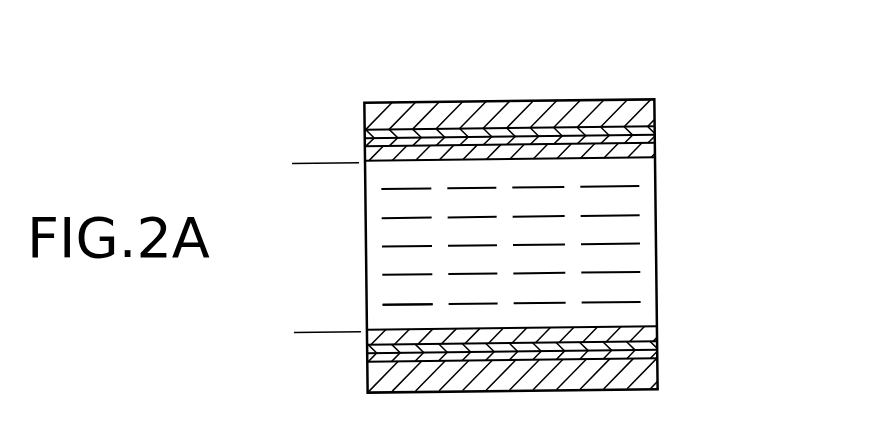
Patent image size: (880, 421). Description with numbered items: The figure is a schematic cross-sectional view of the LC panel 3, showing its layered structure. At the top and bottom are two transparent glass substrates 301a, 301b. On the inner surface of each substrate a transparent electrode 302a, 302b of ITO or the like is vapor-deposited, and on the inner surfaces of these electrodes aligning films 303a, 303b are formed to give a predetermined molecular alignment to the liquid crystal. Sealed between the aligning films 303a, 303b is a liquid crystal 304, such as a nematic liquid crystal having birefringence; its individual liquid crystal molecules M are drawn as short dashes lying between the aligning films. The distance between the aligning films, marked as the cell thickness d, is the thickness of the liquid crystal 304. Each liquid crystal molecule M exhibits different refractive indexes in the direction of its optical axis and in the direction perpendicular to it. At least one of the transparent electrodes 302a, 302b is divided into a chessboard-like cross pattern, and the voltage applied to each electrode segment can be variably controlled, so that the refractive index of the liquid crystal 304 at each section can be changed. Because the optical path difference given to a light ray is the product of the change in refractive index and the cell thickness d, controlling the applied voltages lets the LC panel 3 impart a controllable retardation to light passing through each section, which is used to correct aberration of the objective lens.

The LC panel 3 is at (584, 91).
The transparent glass substrate 301a is at (657, 105).
The transparent electrode 302a is at (657, 128).
The aligning film 303a is at (654, 152).
The liquid crystal 304 is at (668, 155).
The aligning film 303b is at (657, 332).
The transparent electrode 302b is at (657, 351).
The transparent glass substrate 301b is at (657, 375).
The cell thickness d is at (305, 163).
The liquid crystal molecule M is at (400, 305).